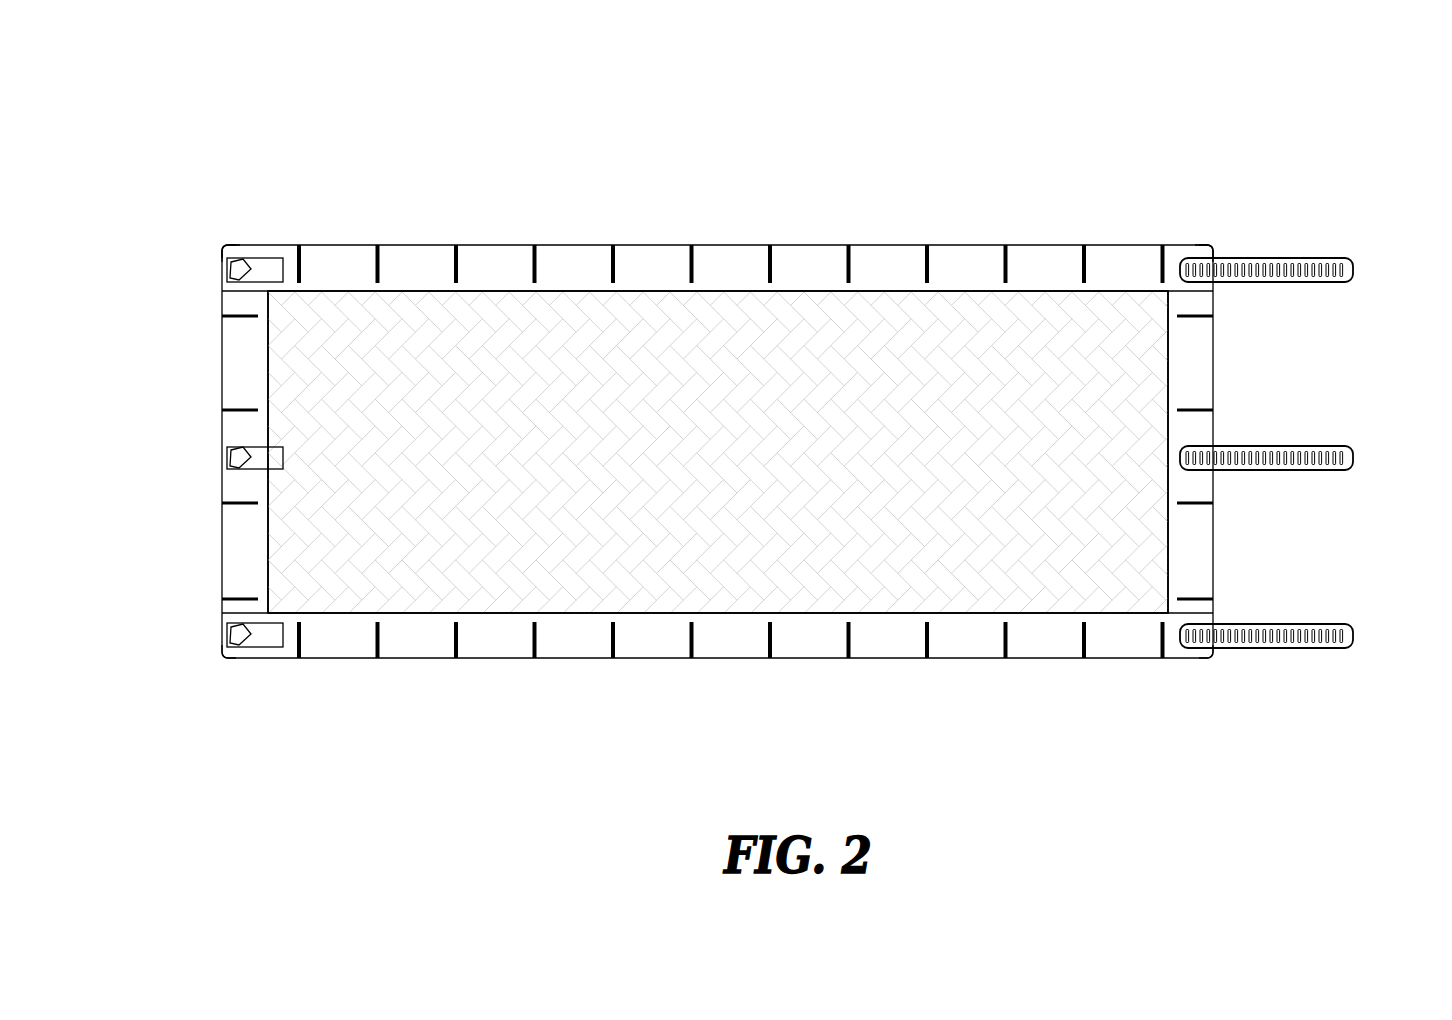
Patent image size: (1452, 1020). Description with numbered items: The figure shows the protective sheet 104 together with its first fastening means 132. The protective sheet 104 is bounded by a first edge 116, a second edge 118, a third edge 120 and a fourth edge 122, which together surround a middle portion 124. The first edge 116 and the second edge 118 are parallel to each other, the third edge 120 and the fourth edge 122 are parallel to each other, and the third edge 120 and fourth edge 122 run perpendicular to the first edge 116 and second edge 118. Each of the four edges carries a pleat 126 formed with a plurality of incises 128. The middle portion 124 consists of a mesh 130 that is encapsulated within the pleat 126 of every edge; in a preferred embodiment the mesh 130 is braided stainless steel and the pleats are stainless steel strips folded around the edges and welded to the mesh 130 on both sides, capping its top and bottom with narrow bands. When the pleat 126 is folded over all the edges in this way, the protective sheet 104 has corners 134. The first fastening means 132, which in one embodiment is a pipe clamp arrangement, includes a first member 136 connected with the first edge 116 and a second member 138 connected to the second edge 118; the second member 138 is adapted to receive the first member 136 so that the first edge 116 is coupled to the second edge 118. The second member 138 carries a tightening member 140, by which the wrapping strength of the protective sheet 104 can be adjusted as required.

The protective sheet 104 is at (368, 118).
The first edge 116 is at (1230, 361).
The second edge 118 is at (205, 361).
The third edge 120 is at (650, 670).
The fourth edge 122 is at (630, 222).
The middle portion 124 is at (703, 420).
The pleat 126 is at (422, 250).
The incises 128 is at (769, 247).
The mesh 130 is at (885, 590).
The first fastening means 132 is at (210, 245).
The corners 134 is at (222, 245).
The first member 136 is at (1353, 270).
The second member 138 is at (270, 258).
The tightening member 140 is at (233, 271).